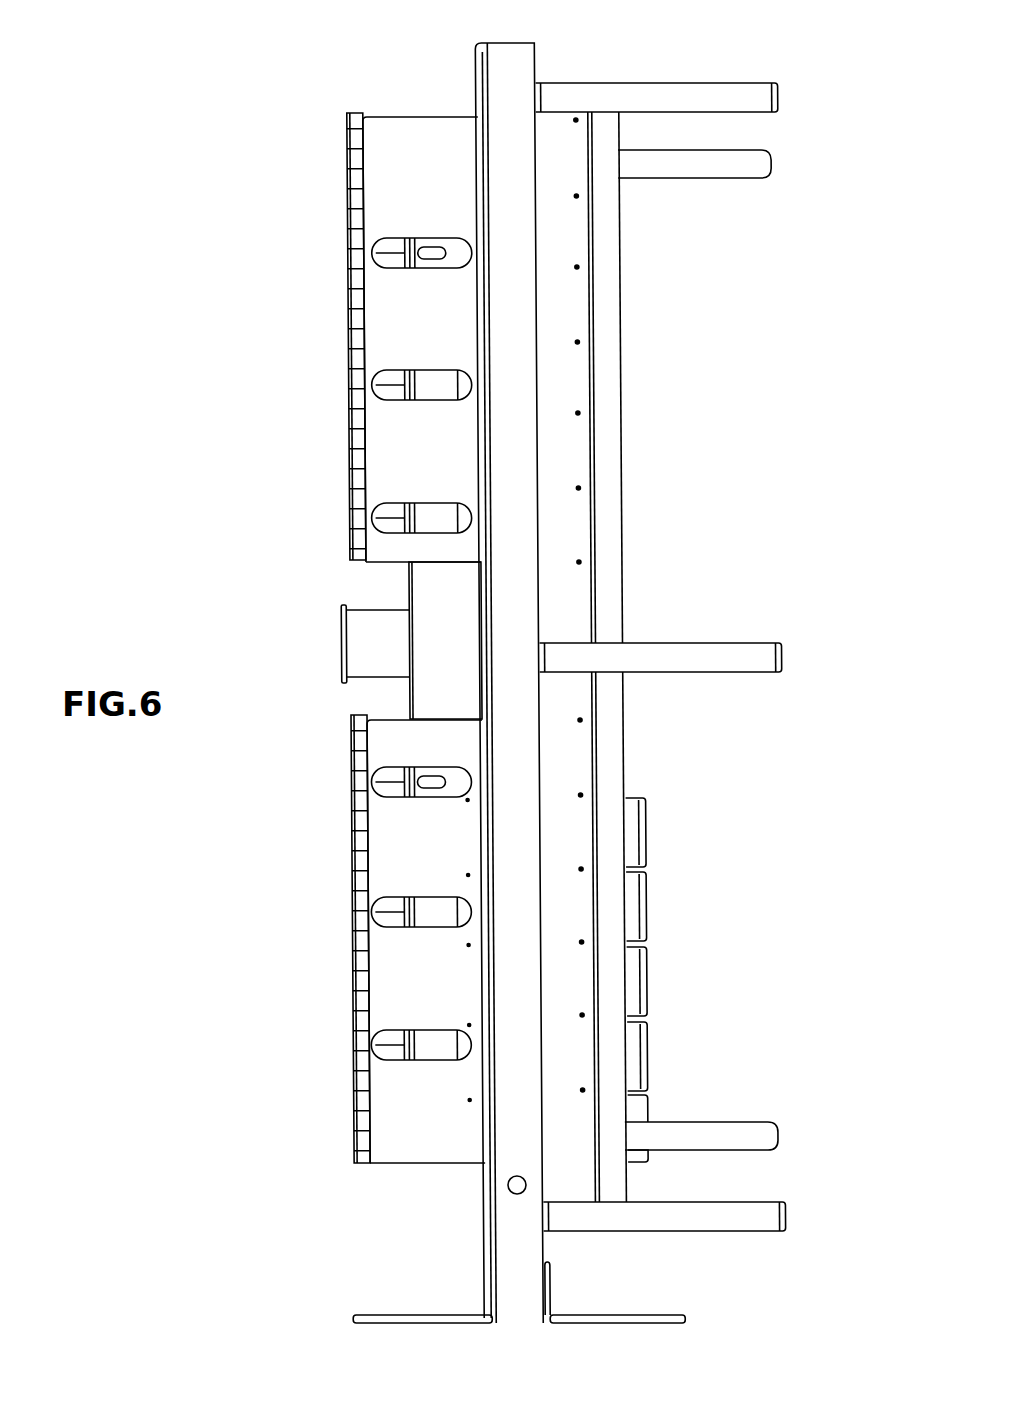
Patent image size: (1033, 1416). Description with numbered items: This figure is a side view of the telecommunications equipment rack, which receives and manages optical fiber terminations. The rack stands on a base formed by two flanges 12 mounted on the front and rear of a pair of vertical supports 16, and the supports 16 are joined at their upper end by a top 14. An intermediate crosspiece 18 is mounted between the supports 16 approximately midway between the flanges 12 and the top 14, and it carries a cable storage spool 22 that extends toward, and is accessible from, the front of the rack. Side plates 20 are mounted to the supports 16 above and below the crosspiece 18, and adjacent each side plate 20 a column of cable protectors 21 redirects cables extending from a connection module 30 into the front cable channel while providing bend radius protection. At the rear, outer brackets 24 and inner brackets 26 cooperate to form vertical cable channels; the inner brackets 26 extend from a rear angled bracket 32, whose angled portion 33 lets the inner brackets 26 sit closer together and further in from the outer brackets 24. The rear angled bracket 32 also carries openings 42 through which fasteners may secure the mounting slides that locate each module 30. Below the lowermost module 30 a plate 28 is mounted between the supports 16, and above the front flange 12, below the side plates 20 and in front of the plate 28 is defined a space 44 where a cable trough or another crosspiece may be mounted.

The flange 12 is at (368, 1315).
The top 14 is at (498, 44).
The vertical support 16 is at (524, 143).
The intermediate crosspiece 18 is at (430, 580).
The side plate 20 is at (433, 170).
The cable protector 21 is at (362, 122).
The cable storage spool 22 is at (368, 635).
The outer bracket 24 is at (710, 90).
The inner bracket 26 is at (738, 160).
The plate 28 is at (485, 1192).
The connection module 30 is at (635, 815).
The rear angled bracket 32 is at (557, 292).
The angled portion 33 is at (612, 393).
The opening 42 is at (578, 343).
The space 44 is at (421, 1253).